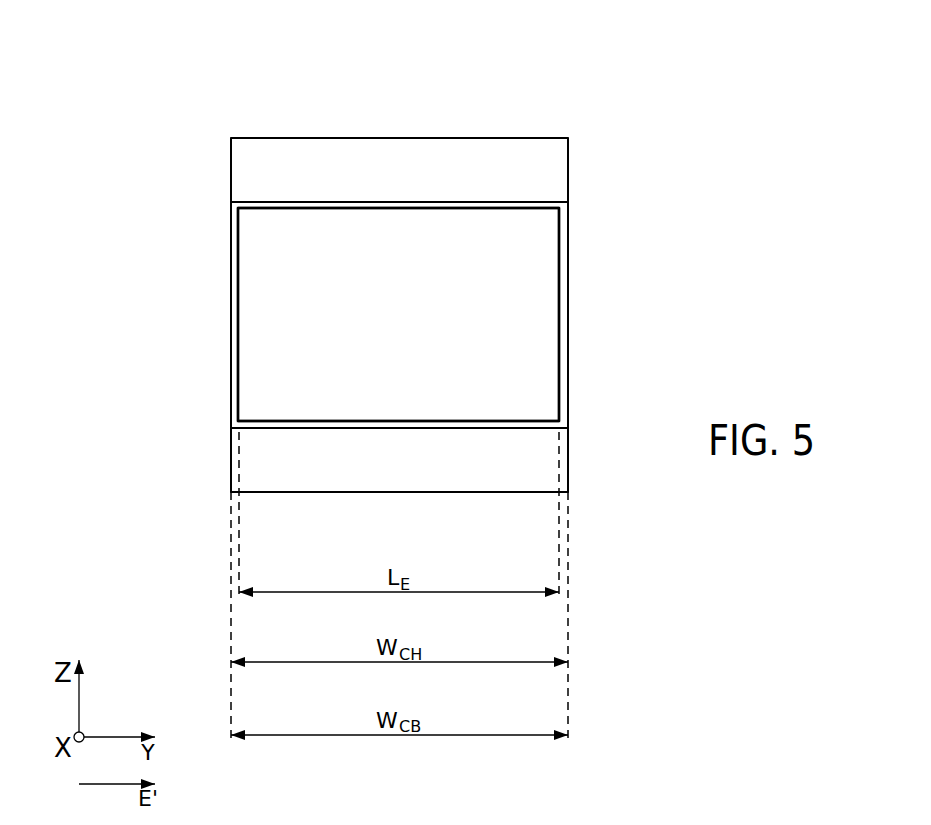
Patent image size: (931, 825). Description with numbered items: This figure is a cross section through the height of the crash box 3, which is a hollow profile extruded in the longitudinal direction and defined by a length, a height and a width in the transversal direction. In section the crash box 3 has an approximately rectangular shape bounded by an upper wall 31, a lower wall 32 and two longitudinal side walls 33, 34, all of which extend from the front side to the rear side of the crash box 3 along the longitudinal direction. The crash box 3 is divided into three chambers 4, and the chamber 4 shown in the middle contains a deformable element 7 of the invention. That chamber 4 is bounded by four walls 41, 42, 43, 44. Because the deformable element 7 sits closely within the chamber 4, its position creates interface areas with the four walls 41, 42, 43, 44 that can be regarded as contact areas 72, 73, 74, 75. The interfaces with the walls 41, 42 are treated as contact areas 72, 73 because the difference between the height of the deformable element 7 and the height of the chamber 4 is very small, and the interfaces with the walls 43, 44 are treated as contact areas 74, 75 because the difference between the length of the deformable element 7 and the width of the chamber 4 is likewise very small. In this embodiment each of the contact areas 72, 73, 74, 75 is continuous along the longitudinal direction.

The crash box 3 is at (252, 105).
The chamber 4 is at (262, 170).
The deformable element 7 is at (487, 314).
The upper wall 31 is at (498, 138).
The lower wall 32 is at (465, 494).
The longitudinal side wall 33 is at (568, 374).
The longitudinal side wall 34 is at (230, 374).
The chamber wall 41 is at (523, 200).
The chamber wall 42 is at (270, 430).
The chamber wall 43 is at (568, 298).
The chamber wall 44 is at (230, 300).
The contact area 72 is at (355, 208).
The contact area 73 is at (528, 424).
The contact area 74 is at (562, 240).
The contact area 75 is at (236, 240).